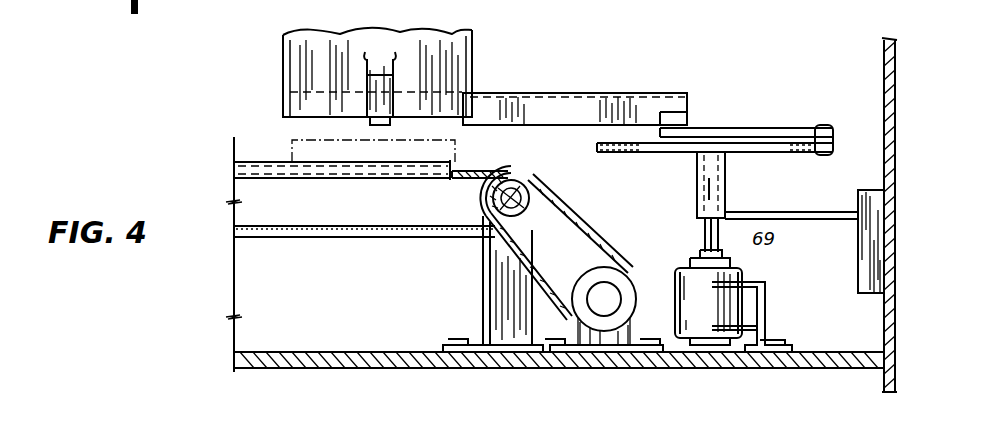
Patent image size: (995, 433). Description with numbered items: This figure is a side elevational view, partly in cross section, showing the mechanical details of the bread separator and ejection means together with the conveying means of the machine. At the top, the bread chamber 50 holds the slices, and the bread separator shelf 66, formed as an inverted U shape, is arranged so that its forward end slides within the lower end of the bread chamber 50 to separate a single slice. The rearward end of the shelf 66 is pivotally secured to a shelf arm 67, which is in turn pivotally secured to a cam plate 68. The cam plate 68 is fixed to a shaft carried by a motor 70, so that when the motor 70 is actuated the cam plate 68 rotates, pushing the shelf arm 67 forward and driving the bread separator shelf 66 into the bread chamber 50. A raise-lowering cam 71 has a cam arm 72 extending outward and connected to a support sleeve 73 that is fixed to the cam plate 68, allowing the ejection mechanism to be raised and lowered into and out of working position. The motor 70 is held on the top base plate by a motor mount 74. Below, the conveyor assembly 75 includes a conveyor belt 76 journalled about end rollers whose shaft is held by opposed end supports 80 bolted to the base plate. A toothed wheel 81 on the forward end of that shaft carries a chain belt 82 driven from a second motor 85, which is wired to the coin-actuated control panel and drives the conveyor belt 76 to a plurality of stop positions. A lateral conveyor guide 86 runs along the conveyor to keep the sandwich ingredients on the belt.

The bread chamber 50 is at (296, 68).
The bread separator shelf 66 is at (580, 93).
The shelf arm 67 is at (738, 129).
The cam plate 68 is at (775, 148).
The motor 70 is at (704, 294).
The raise-lowering cam 71 is at (878, 259).
The cam arm 72 is at (832, 213).
The support sleeve 73 is at (727, 170).
The motor mount 74 is at (766, 319).
The conveyor assembly 75 is at (304, 240).
The conveyor belt 76 is at (478, 172).
The end supports 80 is at (498, 279).
The toothed wheel 81 is at (512, 198).
The chain belt 82 is at (578, 246).
The motor 85 is at (580, 302).
The lateral conveyor guide 86 is at (372, 179).